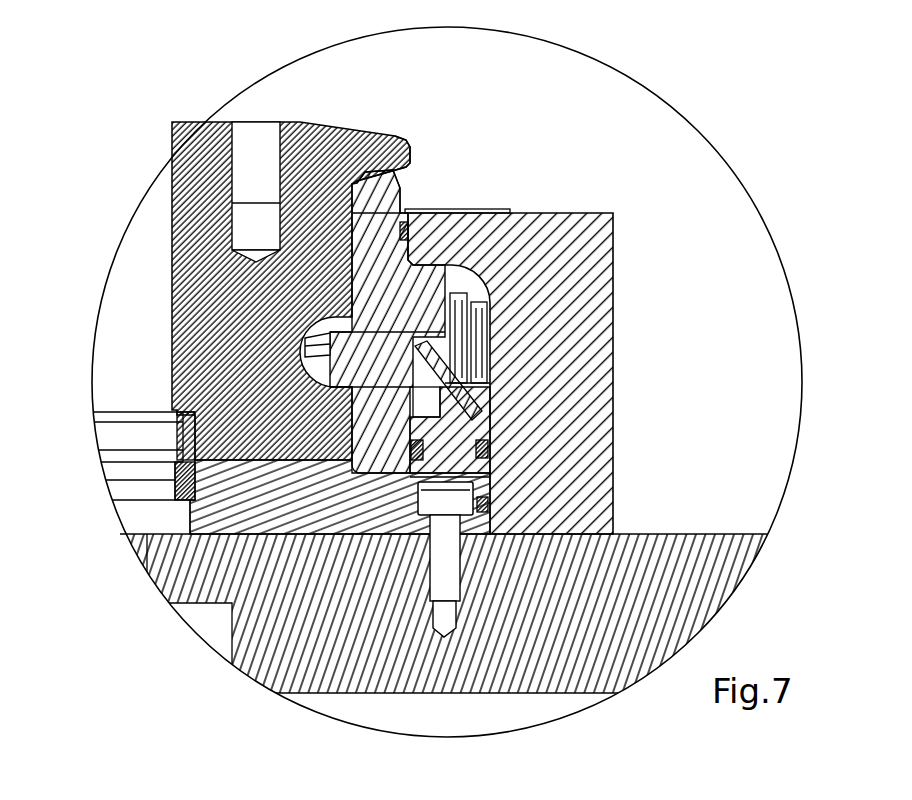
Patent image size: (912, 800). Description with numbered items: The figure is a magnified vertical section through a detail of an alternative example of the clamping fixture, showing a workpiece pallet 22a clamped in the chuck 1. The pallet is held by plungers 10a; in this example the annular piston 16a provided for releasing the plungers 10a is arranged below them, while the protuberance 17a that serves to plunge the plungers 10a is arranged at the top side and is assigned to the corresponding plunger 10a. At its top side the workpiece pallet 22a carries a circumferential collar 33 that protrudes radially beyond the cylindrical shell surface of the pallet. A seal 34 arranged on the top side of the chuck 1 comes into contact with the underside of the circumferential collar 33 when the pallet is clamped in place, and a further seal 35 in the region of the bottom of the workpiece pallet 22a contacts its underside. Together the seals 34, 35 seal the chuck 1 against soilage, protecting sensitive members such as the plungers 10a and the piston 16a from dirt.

The bearing arrangement (detail view) 1 is at (704, 67).
The plunger 10a is at (350, 352).
The annular piston 16a is at (457, 428).
The protuberance 17a is at (410, 396).
The workpiece pallet 22a is at (200, 167).
The circumferential collar 33 is at (396, 137).
The seal 34 is at (420, 179).
The further seal 35 is at (175, 480).